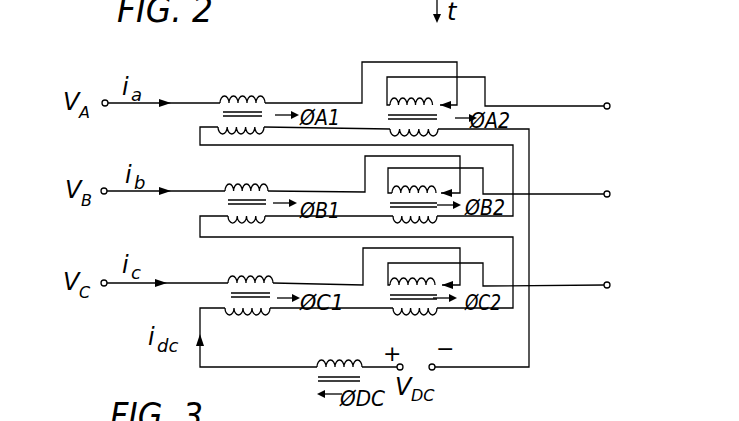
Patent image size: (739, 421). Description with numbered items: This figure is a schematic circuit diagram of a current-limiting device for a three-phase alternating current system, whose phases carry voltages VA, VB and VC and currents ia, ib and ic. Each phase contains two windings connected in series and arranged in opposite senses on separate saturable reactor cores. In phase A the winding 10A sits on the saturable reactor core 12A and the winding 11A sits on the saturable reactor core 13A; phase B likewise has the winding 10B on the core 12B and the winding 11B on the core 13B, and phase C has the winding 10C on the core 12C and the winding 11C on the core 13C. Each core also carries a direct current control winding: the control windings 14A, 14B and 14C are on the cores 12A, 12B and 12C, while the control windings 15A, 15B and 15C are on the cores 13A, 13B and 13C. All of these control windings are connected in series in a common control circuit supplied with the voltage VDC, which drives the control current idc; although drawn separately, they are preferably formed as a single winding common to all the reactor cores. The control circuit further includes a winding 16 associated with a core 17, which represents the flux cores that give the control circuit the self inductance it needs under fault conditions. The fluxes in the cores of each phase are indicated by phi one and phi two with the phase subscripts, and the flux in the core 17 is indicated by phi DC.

The winding 10A is at (253, 96).
The saturable reactor core 12A is at (260, 111).
The direct current control winding 14A is at (217, 124).
The winding 11A is at (438, 101).
The saturable reactor core 13A is at (440, 114).
The direct current control winding 15A is at (390, 128).
The winding 10B is at (224, 186).
The saturable reactor core 12B is at (243, 201).
The direct current control winding 14B is at (208, 230).
The winding 11B is at (402, 188).
The saturable reactor core 13B is at (393, 205).
The direct current control winding 15B is at (433, 221).
The winding 10C is at (238, 281).
The saturable reactor core 12C is at (253, 282).
The direct current control winding 14C is at (275, 299).
The winding 11C is at (400, 280).
The saturable reactor core 13C is at (390, 297).
The direct current control winding 15C is at (412, 318).
The winding 16 is at (331, 358).
The core 17 is at (318, 386).